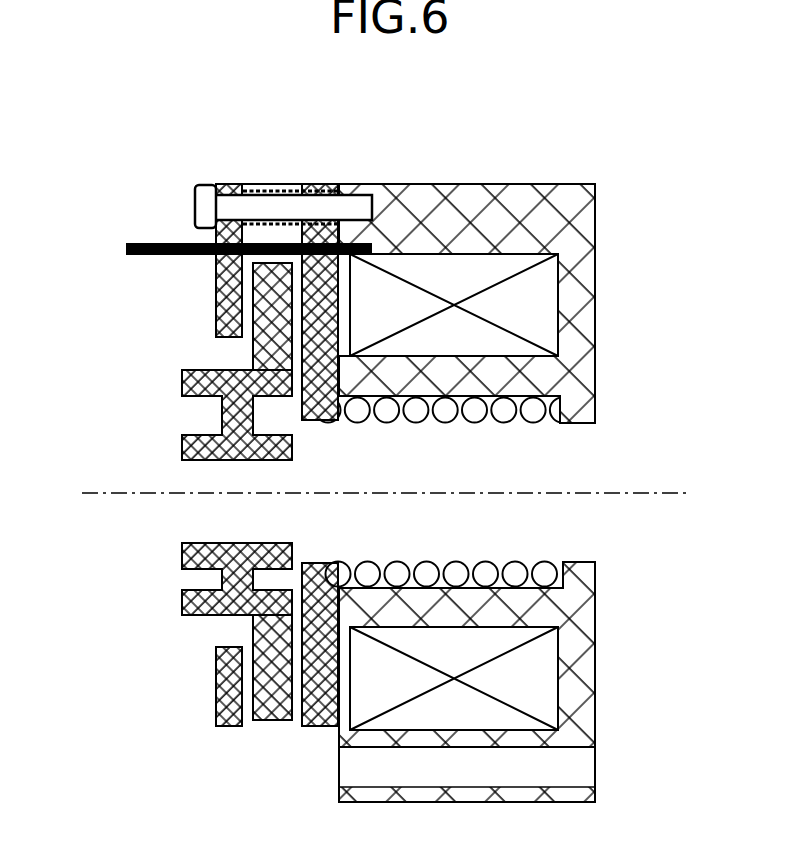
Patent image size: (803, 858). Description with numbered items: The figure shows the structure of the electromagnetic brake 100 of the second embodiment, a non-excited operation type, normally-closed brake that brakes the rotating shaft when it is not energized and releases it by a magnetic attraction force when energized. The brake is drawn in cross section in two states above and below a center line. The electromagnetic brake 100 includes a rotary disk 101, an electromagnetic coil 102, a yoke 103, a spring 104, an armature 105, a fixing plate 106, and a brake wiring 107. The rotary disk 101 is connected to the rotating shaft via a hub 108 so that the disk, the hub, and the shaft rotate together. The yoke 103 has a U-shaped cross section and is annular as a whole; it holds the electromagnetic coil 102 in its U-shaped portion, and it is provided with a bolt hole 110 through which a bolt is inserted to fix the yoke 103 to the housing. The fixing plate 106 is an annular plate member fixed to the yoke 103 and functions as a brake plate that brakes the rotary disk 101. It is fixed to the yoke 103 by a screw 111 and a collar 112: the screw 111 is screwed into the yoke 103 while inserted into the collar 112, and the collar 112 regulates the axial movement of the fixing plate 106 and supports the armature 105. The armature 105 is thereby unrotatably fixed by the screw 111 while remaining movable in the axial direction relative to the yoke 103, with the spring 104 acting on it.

The electromagnetic brake 100 is at (597, 146).
The rotary disk 101 is at (253, 350).
The electromagnetic coil 102 is at (543, 305).
The yoke 103 is at (463, 190).
The spring 104 is at (503, 413).
The armature 105 is at (318, 412).
The fixing plate 106 is at (222, 296).
The brake wiring 107 is at (150, 243).
The hub 108 is at (183, 385).
The bolt hole 110 is at (558, 788).
The screw 111 is at (197, 208).
The collar 112 is at (268, 184).